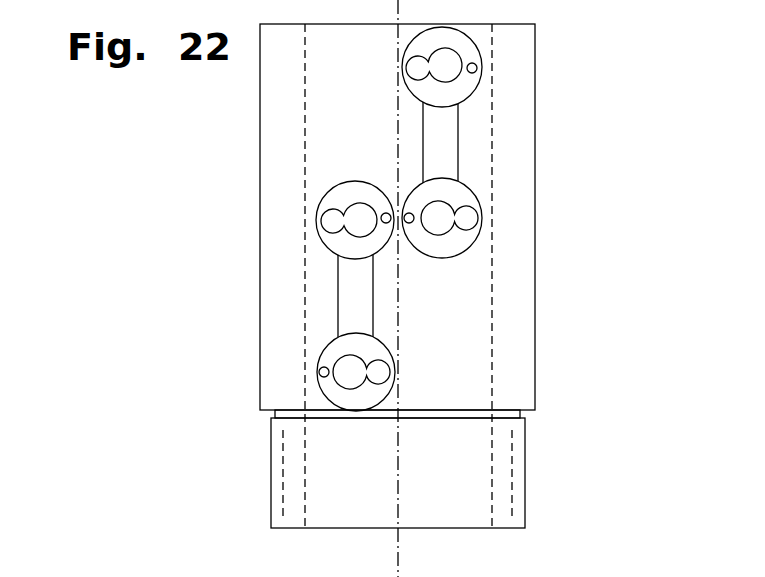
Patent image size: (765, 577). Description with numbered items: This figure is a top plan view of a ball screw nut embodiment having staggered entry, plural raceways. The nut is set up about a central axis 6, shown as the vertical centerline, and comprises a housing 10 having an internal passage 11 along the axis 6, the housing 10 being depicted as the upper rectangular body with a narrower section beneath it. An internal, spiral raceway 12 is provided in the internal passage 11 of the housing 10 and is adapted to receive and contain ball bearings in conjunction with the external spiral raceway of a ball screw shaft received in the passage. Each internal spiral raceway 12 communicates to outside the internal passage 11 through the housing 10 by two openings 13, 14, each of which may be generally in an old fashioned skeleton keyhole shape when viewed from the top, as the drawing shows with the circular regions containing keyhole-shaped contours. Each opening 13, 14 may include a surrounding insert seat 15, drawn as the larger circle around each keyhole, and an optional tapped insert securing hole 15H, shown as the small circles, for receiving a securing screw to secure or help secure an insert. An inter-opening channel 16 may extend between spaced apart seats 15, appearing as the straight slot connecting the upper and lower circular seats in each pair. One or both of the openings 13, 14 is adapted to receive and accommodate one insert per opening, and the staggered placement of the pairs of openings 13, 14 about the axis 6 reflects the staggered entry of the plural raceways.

The central axis 6 is at (450, 548).
The housing 10 is at (576, 337).
The internal passage 11 is at (373, 488).
The internal, spiral raceway 12 is at (283, 560).
The opening 13 is at (590, 244).
The opening 14 is at (607, 123).
The insert seat 15 is at (352, 247).
The tapped insert securing hole 15H is at (552, 293).
The inter-opening channel 16 is at (603, 175).